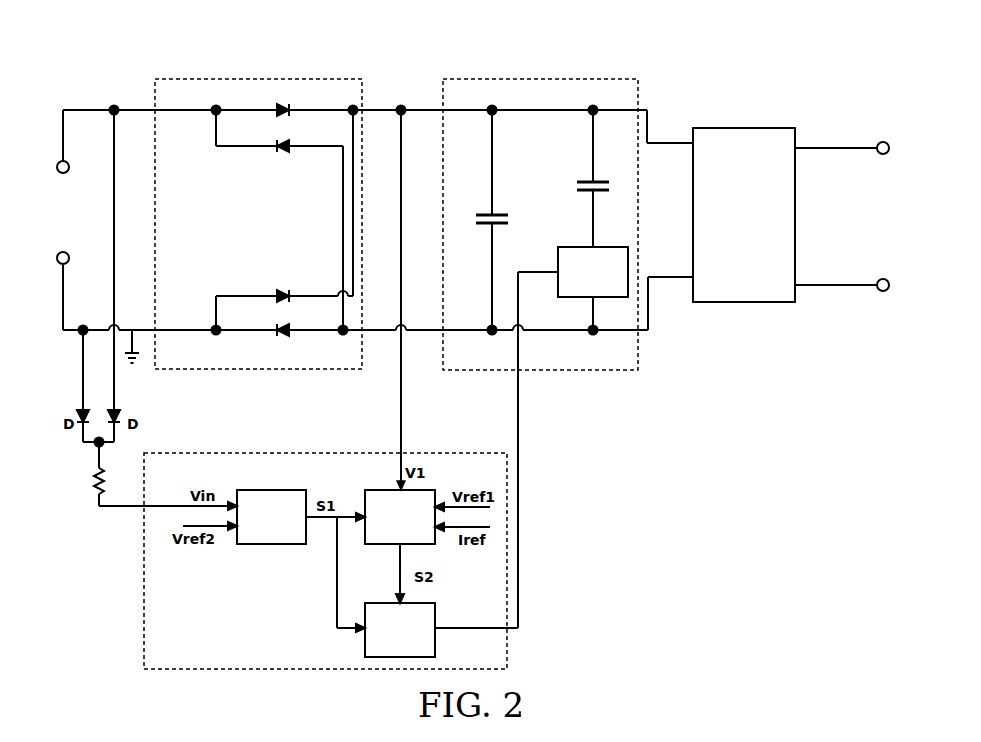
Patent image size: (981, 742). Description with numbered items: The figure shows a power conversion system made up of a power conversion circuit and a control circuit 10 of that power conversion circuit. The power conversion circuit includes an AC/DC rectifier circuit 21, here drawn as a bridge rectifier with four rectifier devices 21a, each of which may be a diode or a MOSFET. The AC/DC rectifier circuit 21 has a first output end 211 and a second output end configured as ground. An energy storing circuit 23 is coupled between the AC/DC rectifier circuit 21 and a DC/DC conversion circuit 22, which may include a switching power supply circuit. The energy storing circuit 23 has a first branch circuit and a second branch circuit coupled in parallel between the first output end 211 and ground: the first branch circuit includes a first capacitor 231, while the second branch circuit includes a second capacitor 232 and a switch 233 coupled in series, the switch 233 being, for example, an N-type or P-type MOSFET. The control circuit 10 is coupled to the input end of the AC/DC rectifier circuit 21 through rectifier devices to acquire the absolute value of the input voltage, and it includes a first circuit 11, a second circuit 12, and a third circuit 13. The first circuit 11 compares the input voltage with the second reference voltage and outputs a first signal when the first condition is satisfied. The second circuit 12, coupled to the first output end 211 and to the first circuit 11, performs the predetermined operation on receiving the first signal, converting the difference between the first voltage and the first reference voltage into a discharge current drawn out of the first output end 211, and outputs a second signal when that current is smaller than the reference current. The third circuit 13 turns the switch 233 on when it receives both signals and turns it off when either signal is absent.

The control circuit 10 is at (325, 539).
The first circuit 11 is at (270, 490).
The second circuit 12 is at (385, 490).
The third circuit 13 is at (392, 603).
The AC/DC rectifier circuit 21 is at (258, 202).
The rectifier device 21a is at (284, 223).
The first output end 211 is at (401, 106).
The DC/DC conversion circuit 22 is at (747, 128).
The energy storing circuit 23 is at (536, 333).
The first capacitor 231 is at (477, 220).
The second capacitor 232 is at (576, 178).
The switch 233 is at (583, 247).